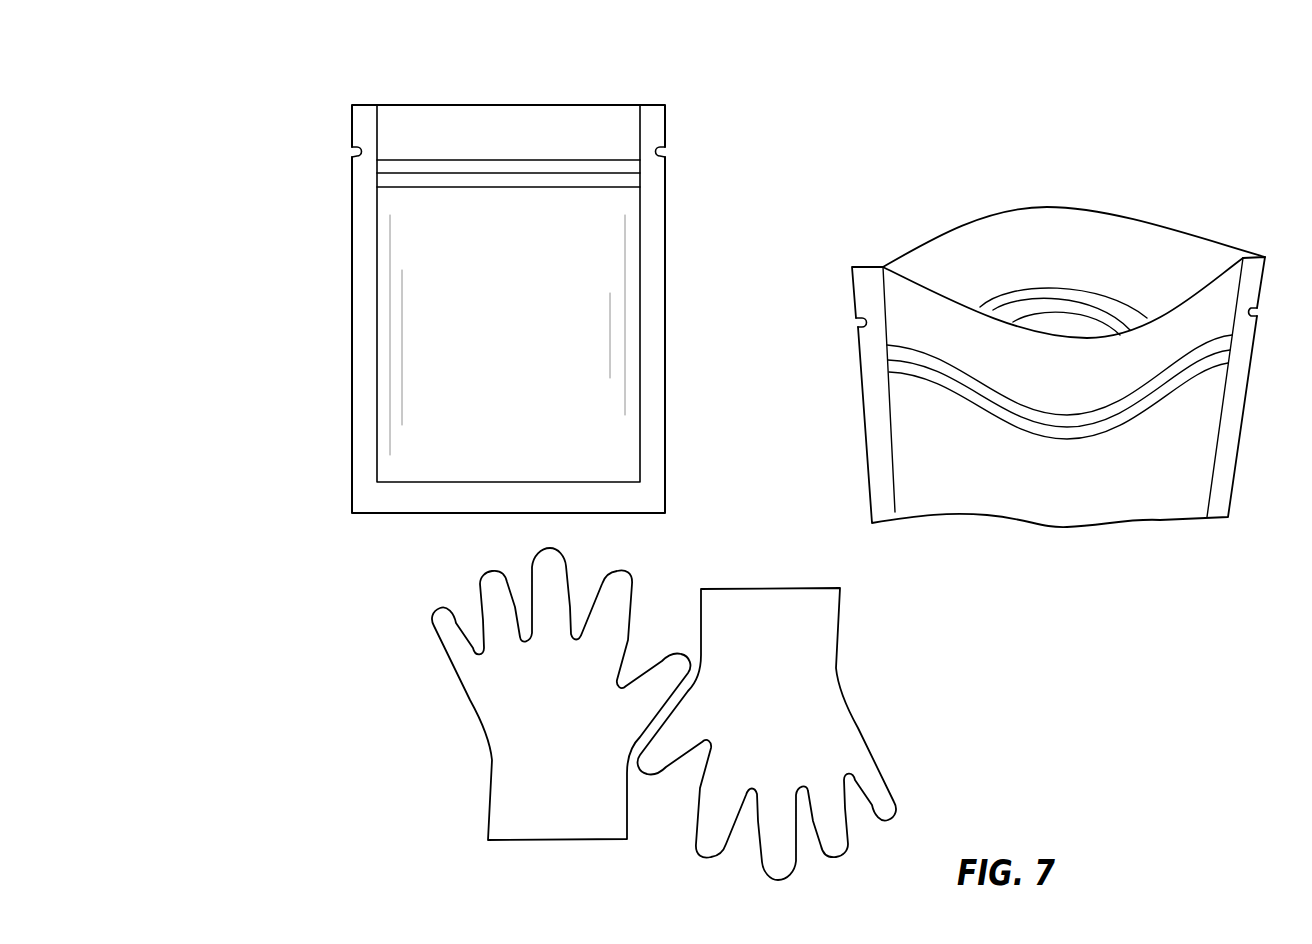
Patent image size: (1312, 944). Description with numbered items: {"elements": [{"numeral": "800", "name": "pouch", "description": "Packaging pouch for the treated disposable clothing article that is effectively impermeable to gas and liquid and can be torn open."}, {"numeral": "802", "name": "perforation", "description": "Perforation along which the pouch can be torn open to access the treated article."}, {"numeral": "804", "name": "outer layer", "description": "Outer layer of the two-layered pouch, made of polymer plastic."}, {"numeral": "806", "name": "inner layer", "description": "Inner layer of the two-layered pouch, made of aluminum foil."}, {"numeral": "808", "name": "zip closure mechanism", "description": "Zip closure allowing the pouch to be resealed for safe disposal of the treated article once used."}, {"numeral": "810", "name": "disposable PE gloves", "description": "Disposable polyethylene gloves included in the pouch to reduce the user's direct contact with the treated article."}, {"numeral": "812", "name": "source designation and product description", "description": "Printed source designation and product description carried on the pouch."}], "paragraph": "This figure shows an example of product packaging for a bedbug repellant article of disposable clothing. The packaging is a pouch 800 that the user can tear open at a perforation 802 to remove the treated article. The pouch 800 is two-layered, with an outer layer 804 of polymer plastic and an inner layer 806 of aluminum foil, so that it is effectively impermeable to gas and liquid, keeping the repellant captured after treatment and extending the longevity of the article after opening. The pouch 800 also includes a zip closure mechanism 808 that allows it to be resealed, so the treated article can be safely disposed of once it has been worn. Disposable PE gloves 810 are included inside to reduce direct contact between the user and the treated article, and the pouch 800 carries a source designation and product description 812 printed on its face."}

The kit 800 is at (583, 84).
The tear notch 802 is at (356, 150).
The header seal region of pouch 804 is at (597, 130).
The open stand-up pouch 806 is at (1170, 267).
The zipper closure 808 is at (518, 187).
The gloves 810 is at (846, 668).
The sealed pouch 812 is at (343, 267).